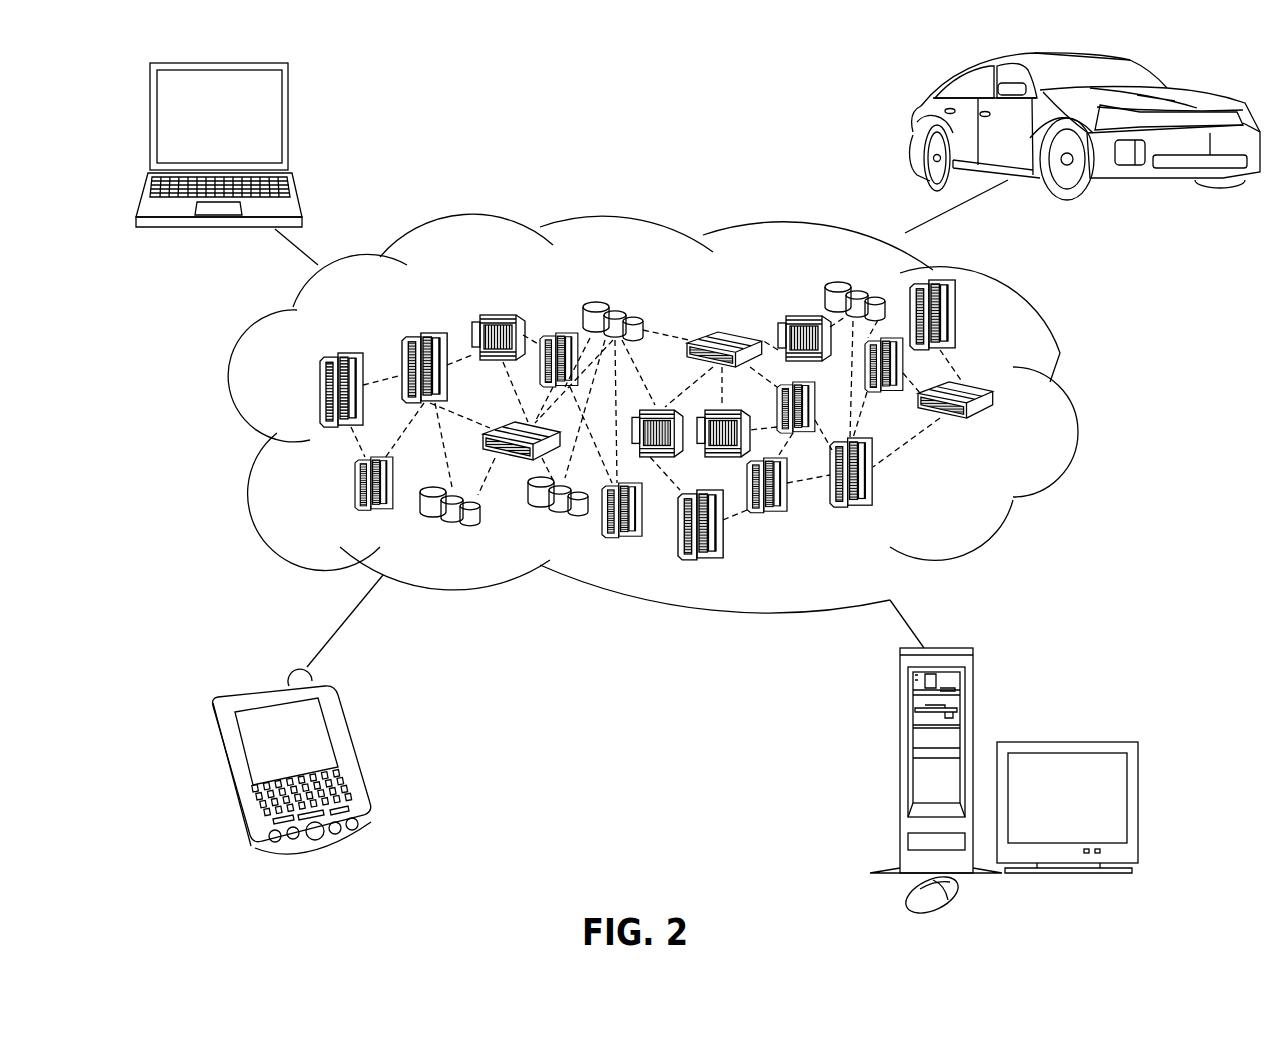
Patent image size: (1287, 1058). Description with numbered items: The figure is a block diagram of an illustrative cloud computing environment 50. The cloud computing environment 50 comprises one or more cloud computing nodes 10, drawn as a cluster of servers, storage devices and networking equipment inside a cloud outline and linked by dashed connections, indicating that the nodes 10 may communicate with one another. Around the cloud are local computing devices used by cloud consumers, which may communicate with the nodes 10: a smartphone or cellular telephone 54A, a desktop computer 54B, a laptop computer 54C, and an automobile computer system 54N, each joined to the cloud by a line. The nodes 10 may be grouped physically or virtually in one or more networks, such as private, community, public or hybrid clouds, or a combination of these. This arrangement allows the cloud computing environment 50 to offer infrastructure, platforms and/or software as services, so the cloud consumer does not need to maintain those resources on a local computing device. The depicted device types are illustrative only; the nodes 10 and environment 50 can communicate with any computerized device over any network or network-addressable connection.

The cloud computing nodes 10 is at (972, 501).
The cloud computing environment 50 is at (1063, 400).
The smartphone or cellular telephone 54A is at (343, 722).
The desktop computer 54B is at (899, 708).
The laptop computer 54C is at (289, 101).
The automobile computer system 54N is at (916, 114).